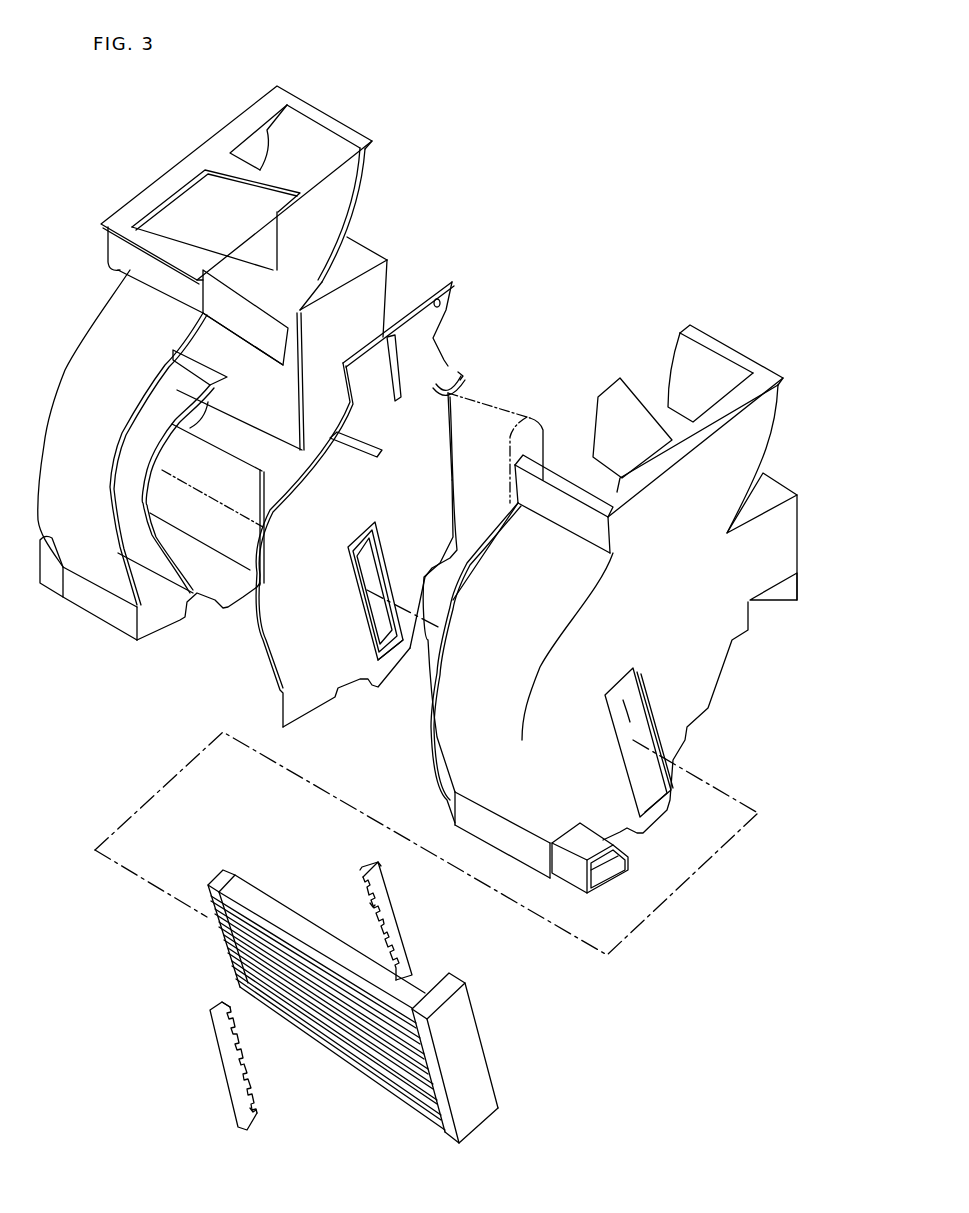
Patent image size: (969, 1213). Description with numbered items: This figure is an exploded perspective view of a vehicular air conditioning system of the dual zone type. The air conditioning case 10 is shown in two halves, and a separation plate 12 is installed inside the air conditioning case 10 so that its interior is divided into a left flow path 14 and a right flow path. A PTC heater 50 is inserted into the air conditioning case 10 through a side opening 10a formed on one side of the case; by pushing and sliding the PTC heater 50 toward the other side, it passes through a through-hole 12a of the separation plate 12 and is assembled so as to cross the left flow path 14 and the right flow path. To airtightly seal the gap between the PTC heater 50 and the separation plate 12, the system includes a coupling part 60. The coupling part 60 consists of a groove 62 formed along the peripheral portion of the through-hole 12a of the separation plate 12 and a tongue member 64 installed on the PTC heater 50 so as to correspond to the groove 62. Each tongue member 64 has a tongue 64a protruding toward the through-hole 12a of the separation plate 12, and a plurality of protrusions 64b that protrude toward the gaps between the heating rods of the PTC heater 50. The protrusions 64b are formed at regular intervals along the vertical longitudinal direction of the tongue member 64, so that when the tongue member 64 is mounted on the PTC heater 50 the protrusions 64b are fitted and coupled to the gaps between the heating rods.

The air conditioning case 10 is at (348, 133).
The side opening 10a is at (628, 718).
The separation plate 12 is at (437, 318).
The through-hole 12a is at (375, 557).
The left flow path 14 is at (213, 471).
The PTC heater 50 is at (410, 1095).
The coupling part 60 is at (389, 893).
The groove 62 is at (379, 650).
The tongue member 64 is at (362, 867).
The tongue 64a is at (362, 866).
The protrusions 64b is at (372, 904).